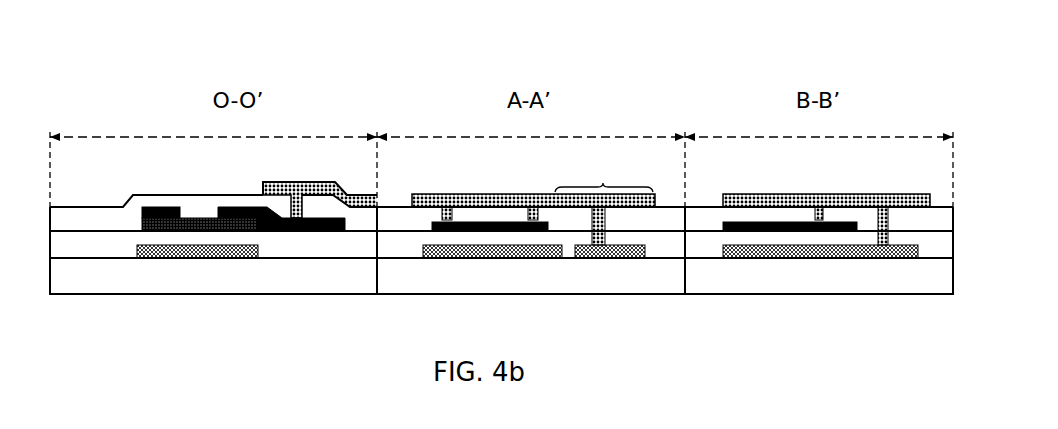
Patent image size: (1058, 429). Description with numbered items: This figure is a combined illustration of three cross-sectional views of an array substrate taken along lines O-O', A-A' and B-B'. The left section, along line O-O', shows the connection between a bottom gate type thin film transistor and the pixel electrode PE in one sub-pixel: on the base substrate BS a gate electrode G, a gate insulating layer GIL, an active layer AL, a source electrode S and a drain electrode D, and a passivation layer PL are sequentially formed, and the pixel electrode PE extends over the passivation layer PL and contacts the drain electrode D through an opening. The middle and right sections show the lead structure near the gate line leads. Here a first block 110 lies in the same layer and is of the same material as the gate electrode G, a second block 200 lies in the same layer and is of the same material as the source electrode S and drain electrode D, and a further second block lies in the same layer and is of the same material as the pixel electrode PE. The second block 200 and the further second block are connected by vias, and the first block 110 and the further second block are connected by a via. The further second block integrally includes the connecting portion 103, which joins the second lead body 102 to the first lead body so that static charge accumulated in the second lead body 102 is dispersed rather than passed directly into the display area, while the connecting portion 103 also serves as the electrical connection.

The second block 200 is at (477, 220).
The connecting portion 103 is at (604, 176).
The first block 110 is at (507, 258).
The second lead body 102 is at (603, 258).
The source electrode S is at (157, 207).
The drain electrode D is at (232, 207).
The pixel electrode PE is at (293, 182).
The active layer AL is at (142, 226).
The passivation layer PL is at (88, 220).
The gate insulating layer GIL is at (87, 248).
The base substrate BS is at (90, 282).
The gate electrode G is at (208, 258).